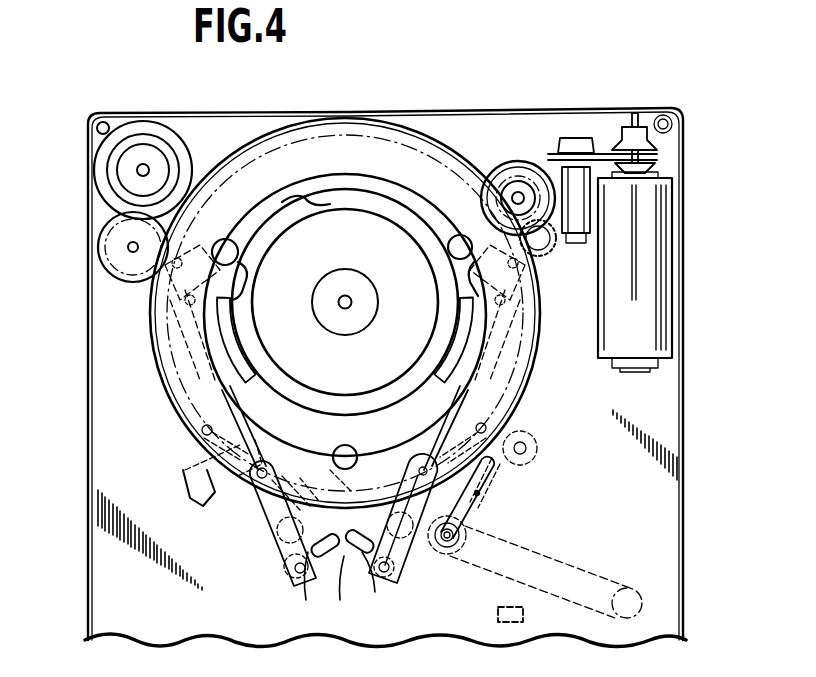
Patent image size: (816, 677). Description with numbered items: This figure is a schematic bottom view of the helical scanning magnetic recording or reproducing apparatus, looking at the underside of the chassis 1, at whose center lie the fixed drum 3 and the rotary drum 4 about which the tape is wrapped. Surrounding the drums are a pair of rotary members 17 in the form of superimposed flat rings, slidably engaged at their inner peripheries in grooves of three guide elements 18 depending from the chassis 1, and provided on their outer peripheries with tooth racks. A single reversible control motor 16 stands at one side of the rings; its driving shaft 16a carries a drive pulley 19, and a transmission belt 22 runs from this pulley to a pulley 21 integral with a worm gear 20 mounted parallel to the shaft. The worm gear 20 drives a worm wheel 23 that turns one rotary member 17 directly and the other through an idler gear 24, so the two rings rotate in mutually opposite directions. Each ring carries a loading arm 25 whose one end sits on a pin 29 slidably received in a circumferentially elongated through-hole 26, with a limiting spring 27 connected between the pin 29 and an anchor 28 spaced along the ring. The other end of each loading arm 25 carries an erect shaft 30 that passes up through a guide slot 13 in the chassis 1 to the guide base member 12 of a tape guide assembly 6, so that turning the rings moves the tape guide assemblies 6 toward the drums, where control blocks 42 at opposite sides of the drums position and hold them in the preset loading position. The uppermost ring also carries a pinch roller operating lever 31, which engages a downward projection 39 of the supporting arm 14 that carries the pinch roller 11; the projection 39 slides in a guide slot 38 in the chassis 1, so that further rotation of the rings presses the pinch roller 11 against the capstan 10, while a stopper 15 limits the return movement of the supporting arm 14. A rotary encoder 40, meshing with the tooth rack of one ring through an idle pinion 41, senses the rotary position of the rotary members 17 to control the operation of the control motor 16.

The chassis 1 is at (672, 430).
The fixed drum 3 is at (368, 258).
The rotary drum 4 is at (345, 302).
The tape guide assembly 6 is at (323, 560).
The capstan 10 is at (532, 452).
The pinch roller 11 is at (452, 553).
The guide base member 12 is at (334, 575).
The guide slot 13 is at (222, 392).
The supporting arm 14 is at (557, 567).
The stopper 15 is at (524, 615).
The control motor 16 is at (673, 214).
The driving shaft 16a is at (637, 130).
The rotary member 17 is at (330, 118).
The guide element 18 is at (224, 250).
The drive pulley 19 is at (655, 125).
The worm gear 20 is at (546, 174).
The pulley 21 is at (588, 150).
The transmission belt 22 is at (606, 152).
The worm wheel 23 is at (508, 175).
The idler gear 24 is at (552, 248).
The loading arm 25 is at (282, 558).
The elongated through-hole 26 is at (274, 515).
The limiting spring 27 is at (196, 468).
The anchor 28 is at (203, 432).
The pin 29 is at (250, 482).
The erect shaft 30 is at (298, 574).
The pinch roller operating lever 31 is at (186, 498).
The guide slot 38 is at (482, 494).
The projection 39 is at (462, 535).
The rotary encoder 40 is at (157, 136).
The idle pinion 41 is at (112, 248).
The control block 42 is at (166, 292).